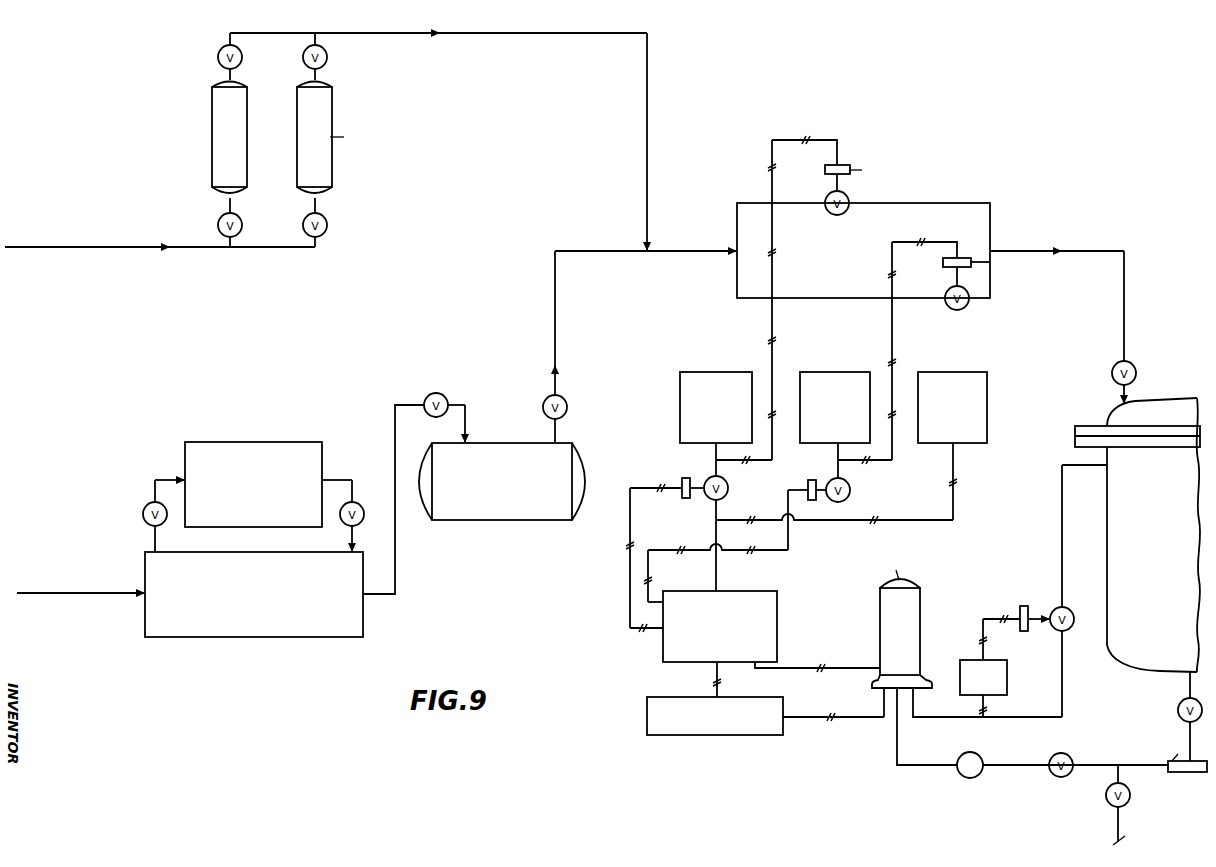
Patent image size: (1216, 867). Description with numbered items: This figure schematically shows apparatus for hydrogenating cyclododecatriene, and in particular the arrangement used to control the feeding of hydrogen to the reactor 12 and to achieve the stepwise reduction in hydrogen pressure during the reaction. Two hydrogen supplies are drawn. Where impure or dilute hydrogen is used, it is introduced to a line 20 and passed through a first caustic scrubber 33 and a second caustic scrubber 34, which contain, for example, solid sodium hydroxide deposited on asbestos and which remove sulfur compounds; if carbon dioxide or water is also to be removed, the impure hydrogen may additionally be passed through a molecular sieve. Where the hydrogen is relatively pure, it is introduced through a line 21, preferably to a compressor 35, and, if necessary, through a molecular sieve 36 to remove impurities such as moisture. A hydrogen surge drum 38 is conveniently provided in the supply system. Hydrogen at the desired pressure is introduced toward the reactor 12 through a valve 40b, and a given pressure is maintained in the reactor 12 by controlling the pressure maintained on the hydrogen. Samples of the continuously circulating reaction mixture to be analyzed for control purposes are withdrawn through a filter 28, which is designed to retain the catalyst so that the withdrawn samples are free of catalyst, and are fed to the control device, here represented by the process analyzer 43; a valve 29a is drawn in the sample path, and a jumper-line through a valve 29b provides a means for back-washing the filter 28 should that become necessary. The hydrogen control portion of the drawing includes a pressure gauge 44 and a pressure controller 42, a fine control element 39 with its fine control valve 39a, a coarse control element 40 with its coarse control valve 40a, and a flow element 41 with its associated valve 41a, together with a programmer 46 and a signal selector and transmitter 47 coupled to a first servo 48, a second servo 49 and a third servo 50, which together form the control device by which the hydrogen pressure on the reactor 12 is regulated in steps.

The reactor 12 is at (1172, 400).
The line 20 is at (48, 250).
The line 21 is at (50, 600).
The filter 28 is at (1175, 773).
The valve 29a is at (1051, 777).
The valve 29b is at (1106, 806).
The caustic scrubber 33 is at (215, 105).
The caustic scrubber 34 is at (333, 105).
The compressor 35 is at (245, 637).
The molecular sieve 36 is at (255, 442).
The hydrogen surge drum 38 is at (500, 447).
The fine control element 39 is at (825, 170).
The fine control valve 39a is at (837, 215).
The coarse control element 40 is at (943, 262).
The coarse control valve 40a is at (957, 310).
The valve 40b is at (1112, 377).
The flow element 41 is at (1024, 606).
The valve 41a is at (1069, 609).
The pressure controller 42 is at (1007, 679).
The process analyzer 43 is at (914, 606).
The pressure gauge 44 is at (959, 776).
The programmer 46 is at (672, 697).
The signal selector and transmitter 47 is at (777, 620).
The servo 1 48 is at (711, 376).
The servo 2 49 is at (830, 380).
The servo 3 50 is at (947, 376).